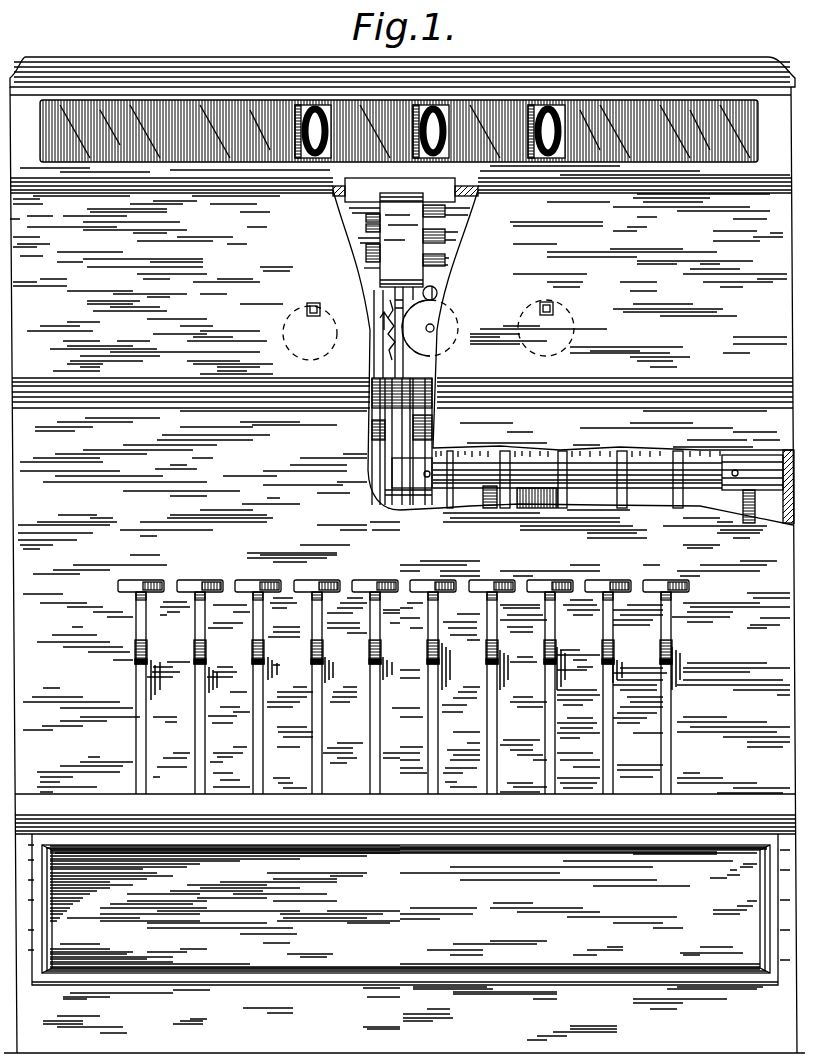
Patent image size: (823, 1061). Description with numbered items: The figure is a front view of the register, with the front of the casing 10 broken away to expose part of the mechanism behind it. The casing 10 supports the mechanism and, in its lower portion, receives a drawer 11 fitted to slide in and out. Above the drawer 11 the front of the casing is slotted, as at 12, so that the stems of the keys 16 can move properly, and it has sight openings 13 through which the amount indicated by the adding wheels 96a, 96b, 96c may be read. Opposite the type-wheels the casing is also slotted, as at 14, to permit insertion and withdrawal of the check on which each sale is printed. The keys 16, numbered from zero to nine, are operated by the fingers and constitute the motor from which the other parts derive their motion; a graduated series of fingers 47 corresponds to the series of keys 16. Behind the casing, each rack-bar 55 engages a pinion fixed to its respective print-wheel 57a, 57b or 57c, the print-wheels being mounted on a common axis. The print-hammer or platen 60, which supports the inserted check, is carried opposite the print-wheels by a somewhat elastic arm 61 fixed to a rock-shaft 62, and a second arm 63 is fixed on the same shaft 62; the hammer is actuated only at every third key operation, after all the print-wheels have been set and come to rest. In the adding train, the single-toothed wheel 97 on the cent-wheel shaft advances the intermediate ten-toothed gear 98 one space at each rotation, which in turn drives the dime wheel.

The casing 10 is at (404, 555).
The drawer 11 is at (406, 909).
The slot 12 is at (196, 744).
The sight openings 13 is at (318, 299).
The check slot 14 is at (358, 190).
The keys 16 is at (200, 622).
The fingers 47 is at (386, 475).
The rack-bar 55 is at (447, 212).
The print-wheel 57a is at (367, 254).
The print-wheel 57b is at (367, 226).
The print-wheel 57c is at (367, 218).
The print-hammer 60 is at (401, 240).
The arm 61 is at (402, 394).
The rock-shaft 62 is at (590, 470).
The second arm 63 is at (746, 512).
The adding wheel 96a is at (284, 322).
The adding wheel 96b is at (442, 326).
The adding wheel 96c is at (572, 321).
The single-toothed wheel 97 is at (399, 335).
The intermediate ten-toothed gear 98 is at (374, 340).